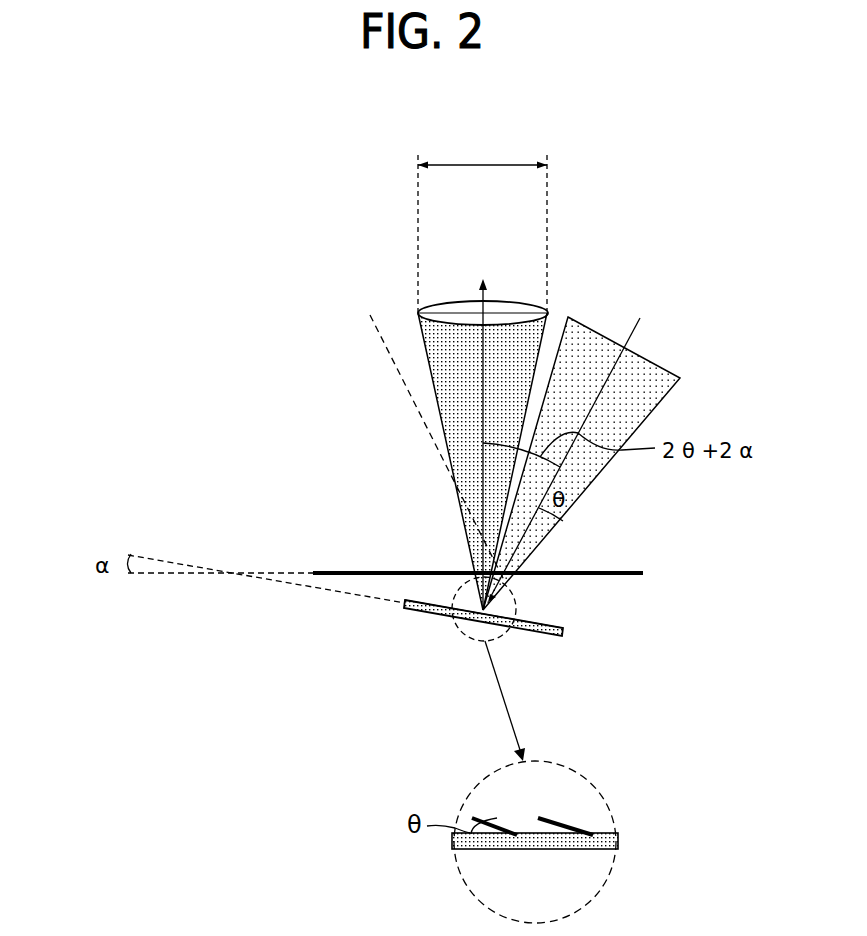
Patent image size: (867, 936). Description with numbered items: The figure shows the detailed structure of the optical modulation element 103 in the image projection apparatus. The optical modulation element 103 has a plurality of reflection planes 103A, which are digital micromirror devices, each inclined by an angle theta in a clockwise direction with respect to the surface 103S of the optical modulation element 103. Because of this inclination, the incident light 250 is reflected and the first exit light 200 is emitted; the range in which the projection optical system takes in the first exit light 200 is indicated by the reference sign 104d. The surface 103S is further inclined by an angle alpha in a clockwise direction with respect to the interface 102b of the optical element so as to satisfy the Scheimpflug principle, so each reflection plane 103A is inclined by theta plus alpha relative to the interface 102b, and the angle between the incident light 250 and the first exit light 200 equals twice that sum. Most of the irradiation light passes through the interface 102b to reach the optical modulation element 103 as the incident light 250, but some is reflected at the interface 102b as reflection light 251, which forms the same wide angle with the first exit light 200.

The range taken in by the projection optical system 104d is at (482, 226).
The first exit light 200 is at (483, 431).
The incident light 250 is at (626, 346).
The reflection light 251 is at (400, 377).
The interface of the optical element 102b is at (611, 578).
The optical modulation element 103 is at (538, 633).
The surface of the optical modulation element 103S is at (426, 600).
The reflection planes 103A is at (498, 822).